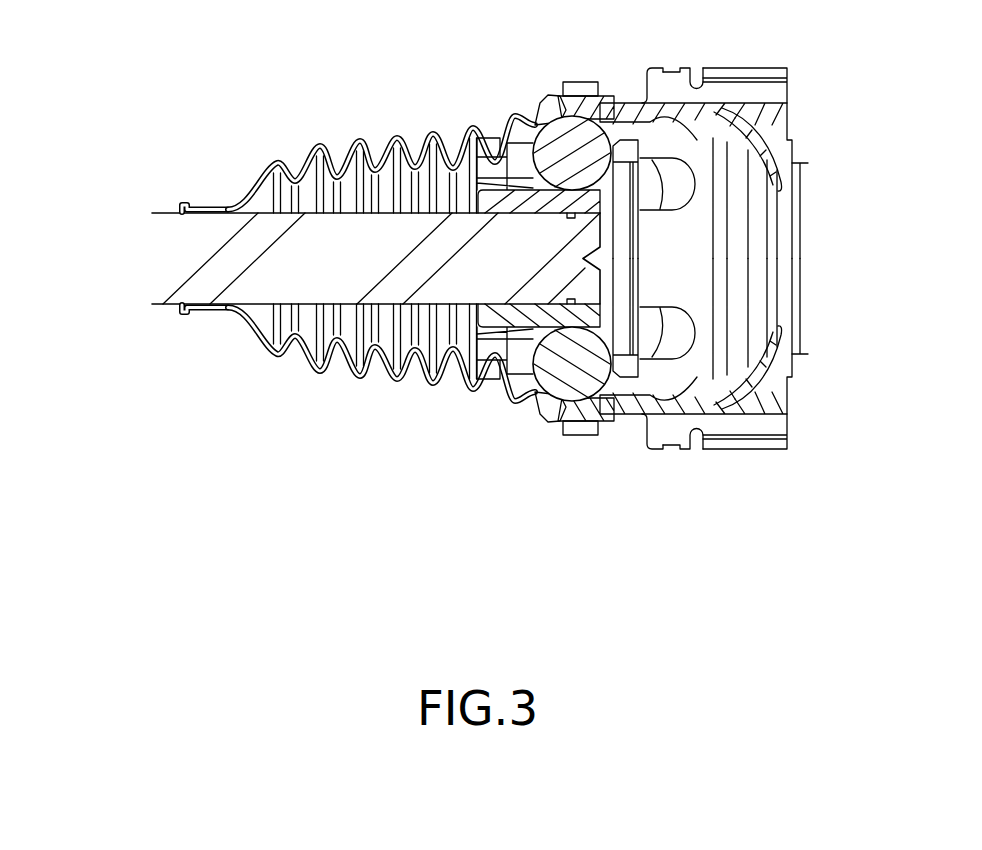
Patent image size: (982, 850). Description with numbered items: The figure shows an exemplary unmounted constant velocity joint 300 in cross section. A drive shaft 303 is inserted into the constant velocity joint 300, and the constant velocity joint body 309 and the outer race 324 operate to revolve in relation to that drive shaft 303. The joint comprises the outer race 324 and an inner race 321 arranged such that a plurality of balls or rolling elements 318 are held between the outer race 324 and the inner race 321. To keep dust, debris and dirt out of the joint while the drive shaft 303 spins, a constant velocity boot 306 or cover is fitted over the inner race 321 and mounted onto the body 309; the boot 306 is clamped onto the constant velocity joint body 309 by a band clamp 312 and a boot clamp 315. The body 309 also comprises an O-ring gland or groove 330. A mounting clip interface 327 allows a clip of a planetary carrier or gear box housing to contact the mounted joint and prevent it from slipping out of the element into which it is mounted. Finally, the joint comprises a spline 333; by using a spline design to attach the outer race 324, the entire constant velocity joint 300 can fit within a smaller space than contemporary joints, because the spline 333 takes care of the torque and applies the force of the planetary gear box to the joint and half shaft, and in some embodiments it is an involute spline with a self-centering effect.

The constant velocity joint 300 is at (152, 78).
The drive shaft 303 is at (166, 212).
The constant velocity boot 306 is at (264, 172).
The constant velocity joint body 309 is at (785, 133).
The band clamp 312 is at (582, 85).
The boot clamp 315 is at (212, 210).
The rolling elements 318 is at (548, 132).
The inner race 321 is at (538, 301).
The outer race 324 is at (625, 110).
The mounting clip interface 327 is at (652, 66).
The O-ring gland or groove 330 is at (675, 67).
The spline 333 is at (718, 68).